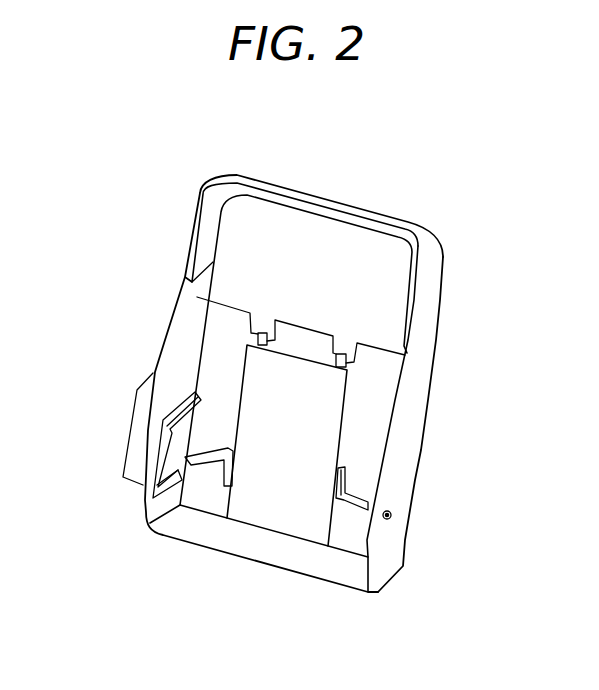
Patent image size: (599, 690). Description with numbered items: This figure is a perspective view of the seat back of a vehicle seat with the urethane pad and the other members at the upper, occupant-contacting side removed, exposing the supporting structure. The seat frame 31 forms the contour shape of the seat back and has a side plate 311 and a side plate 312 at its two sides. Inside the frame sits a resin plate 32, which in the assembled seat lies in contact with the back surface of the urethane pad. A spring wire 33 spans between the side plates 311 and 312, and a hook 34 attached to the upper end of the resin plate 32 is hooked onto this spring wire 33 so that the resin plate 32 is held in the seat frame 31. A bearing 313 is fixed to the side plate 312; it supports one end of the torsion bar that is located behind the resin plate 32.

The seat frame 31 is at (430, 232).
The side plate 311 is at (182, 335).
The side plate 312 is at (390, 475).
The bearing 313 is at (391, 517).
The resin plate 32 is at (313, 418).
The spring wire 33 is at (377, 348).
The hook 34 is at (347, 369).